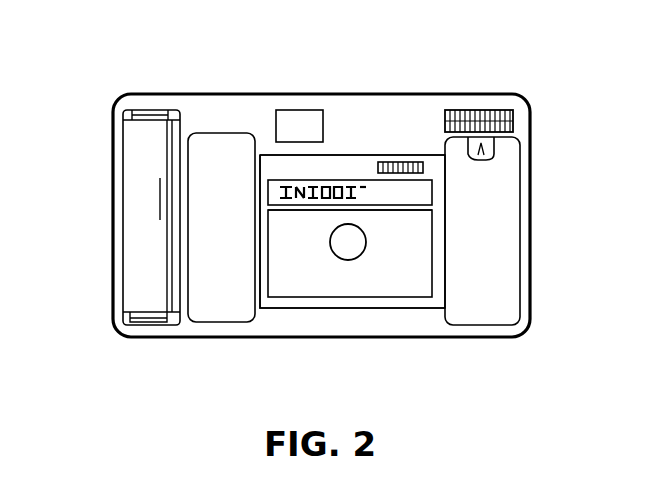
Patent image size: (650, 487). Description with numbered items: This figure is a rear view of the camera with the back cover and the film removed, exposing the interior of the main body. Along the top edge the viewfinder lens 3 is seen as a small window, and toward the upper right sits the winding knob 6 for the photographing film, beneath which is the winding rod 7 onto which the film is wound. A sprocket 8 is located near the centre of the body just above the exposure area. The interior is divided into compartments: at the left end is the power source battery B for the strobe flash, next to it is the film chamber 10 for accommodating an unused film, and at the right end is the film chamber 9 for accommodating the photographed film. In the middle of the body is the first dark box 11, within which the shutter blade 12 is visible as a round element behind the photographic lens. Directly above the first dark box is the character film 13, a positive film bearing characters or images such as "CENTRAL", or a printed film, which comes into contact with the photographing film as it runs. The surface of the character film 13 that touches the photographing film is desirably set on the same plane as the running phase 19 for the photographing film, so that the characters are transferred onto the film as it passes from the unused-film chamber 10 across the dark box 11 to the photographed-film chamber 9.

The power source battery B is at (148, 183).
The viewfinder lens 3 is at (298, 130).
The winding knob 6 is at (490, 110).
The winding rod 7 is at (490, 150).
The sprocket 8 is at (398, 162).
The film chamber 9 is at (498, 252).
The film chamber 10 is at (205, 150).
The first dark box 11 is at (325, 277).
The shutter blade 12 is at (360, 255).
The character film 13 is at (320, 183).
The running phase 19 is at (274, 167).